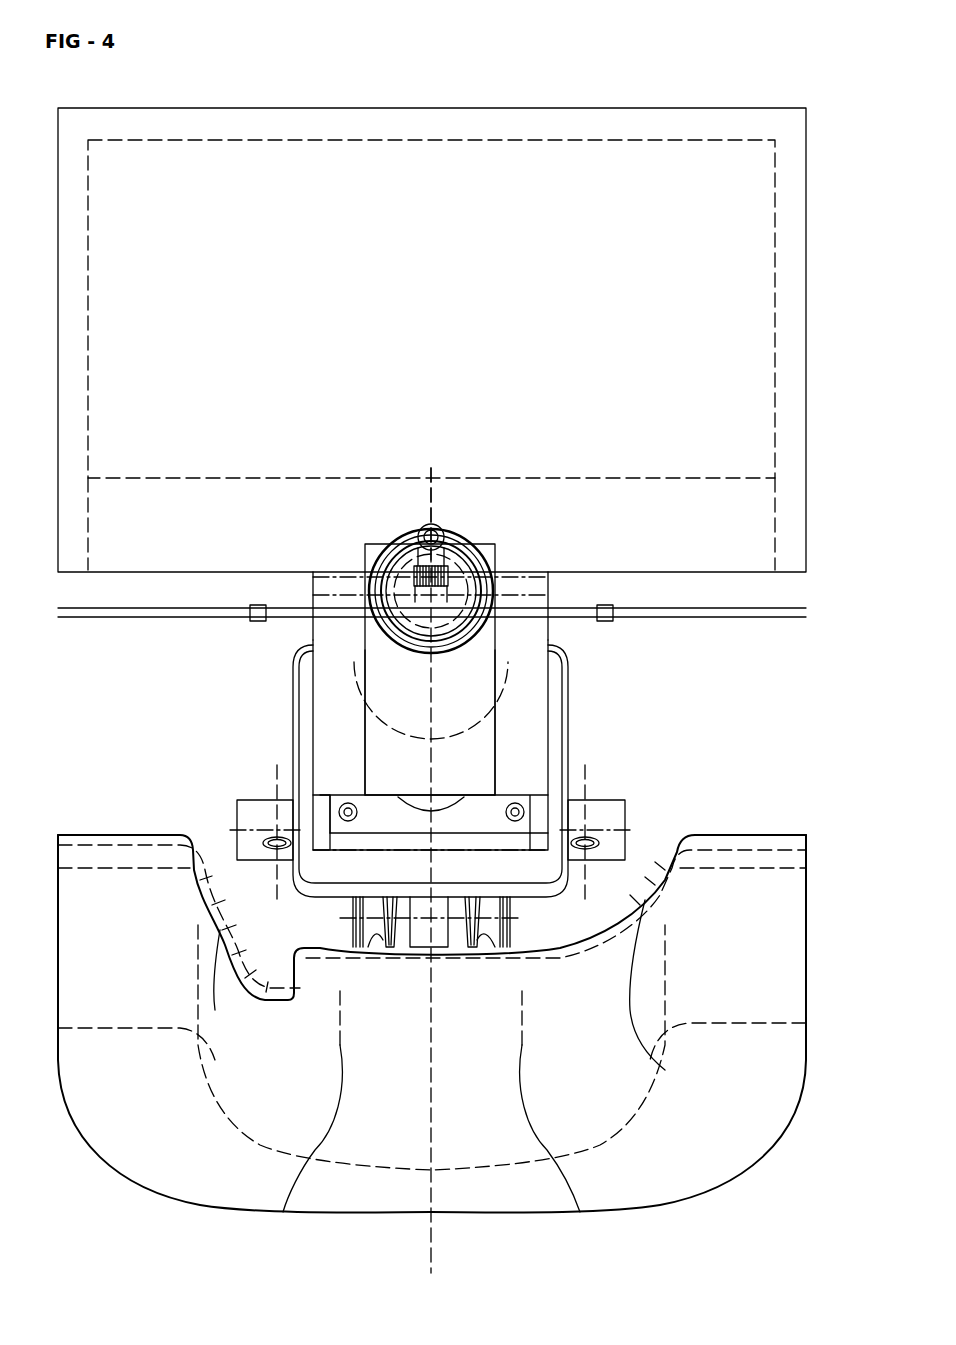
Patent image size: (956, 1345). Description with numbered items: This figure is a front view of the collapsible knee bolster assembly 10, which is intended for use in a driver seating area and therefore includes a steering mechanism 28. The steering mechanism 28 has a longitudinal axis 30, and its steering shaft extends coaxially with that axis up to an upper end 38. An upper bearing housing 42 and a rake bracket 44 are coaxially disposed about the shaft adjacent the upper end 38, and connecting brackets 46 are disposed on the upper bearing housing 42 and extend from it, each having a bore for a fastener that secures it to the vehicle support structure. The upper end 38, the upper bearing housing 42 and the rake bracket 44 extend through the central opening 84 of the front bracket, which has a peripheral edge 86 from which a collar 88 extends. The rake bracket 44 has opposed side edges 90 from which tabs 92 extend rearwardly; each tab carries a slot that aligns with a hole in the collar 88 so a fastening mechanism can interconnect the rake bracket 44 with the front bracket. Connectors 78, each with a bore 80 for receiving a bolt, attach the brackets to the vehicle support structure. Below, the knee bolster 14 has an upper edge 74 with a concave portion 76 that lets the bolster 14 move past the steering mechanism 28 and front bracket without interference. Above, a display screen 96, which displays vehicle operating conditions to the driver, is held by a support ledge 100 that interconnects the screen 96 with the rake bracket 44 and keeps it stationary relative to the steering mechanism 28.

The collapsible knee bolster assembly 10 is at (541, 88).
The knee bolster 14 is at (812, 1000).
The steering mechanism 28 is at (498, 630).
The longitudinal axis 30 is at (432, 490).
The upper end 38 is at (425, 532).
The upper bearing housing 42 is at (488, 668).
The rake bracket 44 is at (535, 690).
The connecting brackets 46 is at (612, 618).
The upper edge 74 is at (728, 835).
The concave portion 76 is at (585, 935).
The connectors 78 is at (248, 802).
The bore 80 is at (268, 850).
The central opening 84 is at (392, 800).
The peripheral edge 86 is at (333, 858).
The collar 88 is at (300, 724).
The side edges 90 is at (548, 732).
The tabs 92 is at (325, 805).
The display screen 96 is at (820, 225).
The support ledge 100 is at (548, 592).